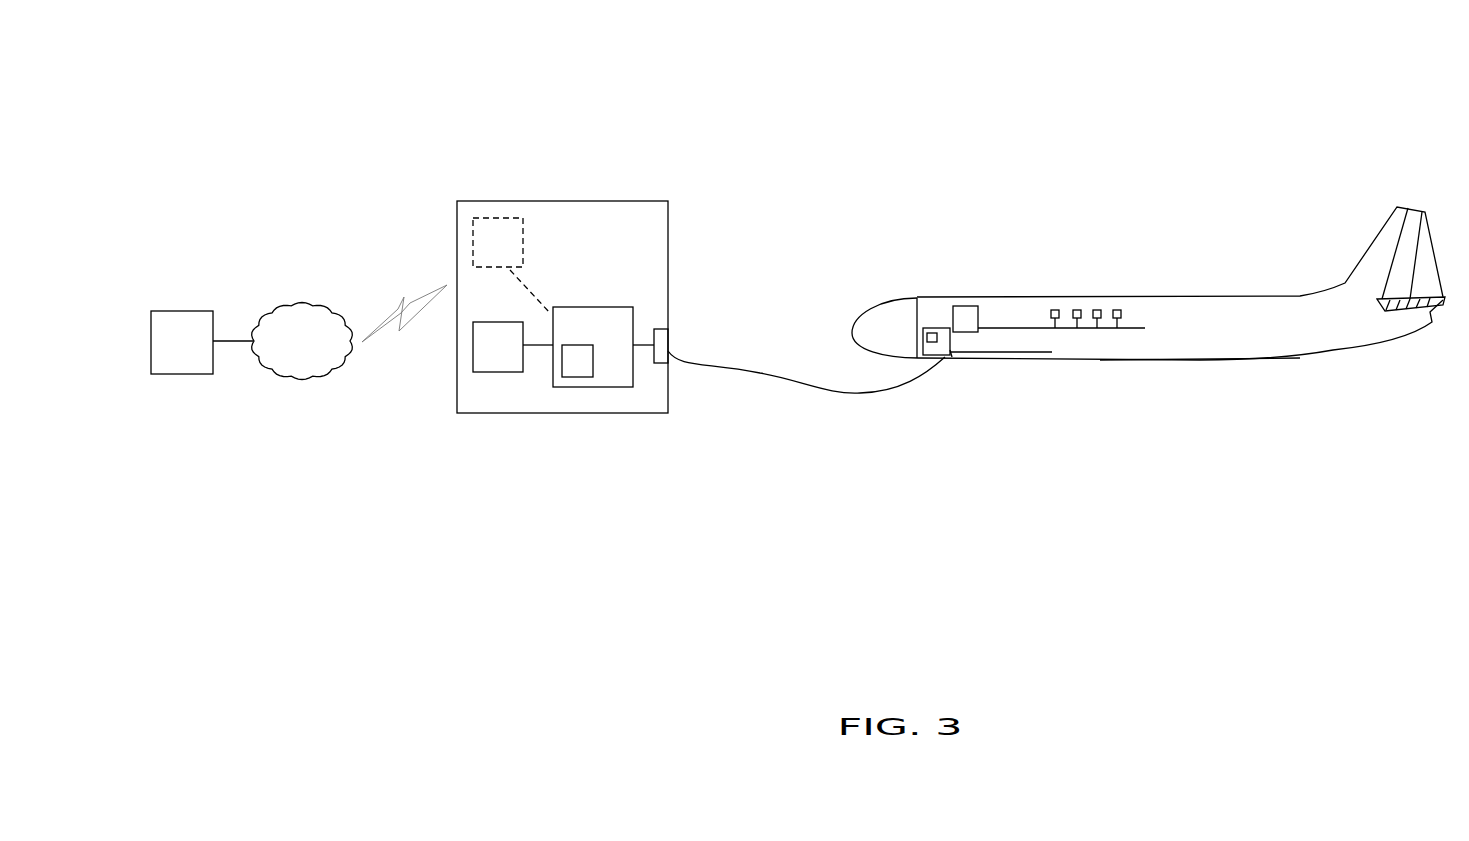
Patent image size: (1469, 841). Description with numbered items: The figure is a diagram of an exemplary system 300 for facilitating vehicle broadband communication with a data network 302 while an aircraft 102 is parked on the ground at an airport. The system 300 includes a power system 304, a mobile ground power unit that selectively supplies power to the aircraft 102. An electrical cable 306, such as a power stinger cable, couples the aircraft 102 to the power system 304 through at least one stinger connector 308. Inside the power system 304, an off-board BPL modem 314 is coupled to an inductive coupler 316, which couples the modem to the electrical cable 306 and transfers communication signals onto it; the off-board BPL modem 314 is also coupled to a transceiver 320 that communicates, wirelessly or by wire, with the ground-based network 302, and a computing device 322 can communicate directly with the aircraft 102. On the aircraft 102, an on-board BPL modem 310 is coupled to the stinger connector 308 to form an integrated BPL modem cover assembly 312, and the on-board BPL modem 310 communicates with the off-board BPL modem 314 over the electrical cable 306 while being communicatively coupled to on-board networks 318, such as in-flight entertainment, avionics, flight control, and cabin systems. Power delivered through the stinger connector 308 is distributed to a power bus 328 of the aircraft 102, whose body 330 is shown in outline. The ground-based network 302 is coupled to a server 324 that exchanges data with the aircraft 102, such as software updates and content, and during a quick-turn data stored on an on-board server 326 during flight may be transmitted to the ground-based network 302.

The system 300 is at (1060, 58).
The aircraft 102 is at (1245, 296).
The data network 302 is at (302, 379).
The power system 304 is at (600, 201).
The electrical cable 306 is at (832, 397).
The stinger connector 308 is at (658, 329).
The on-board BPL modem 310 is at (923, 332).
The integrated BPL modem cover assembly 312 is at (953, 360).
The off-board BPL modem 314 is at (592, 307).
The inductive coupler 316 is at (572, 377).
The on-board networks 318 is at (1057, 308).
The transceiver 320 is at (492, 372).
The computing device 322 is at (495, 218).
The server 324 is at (182, 342).
The on-board server 326 is at (960, 306).
The power bus 328 is at (1052, 352).
The fuselage 330 is at (1228, 332).